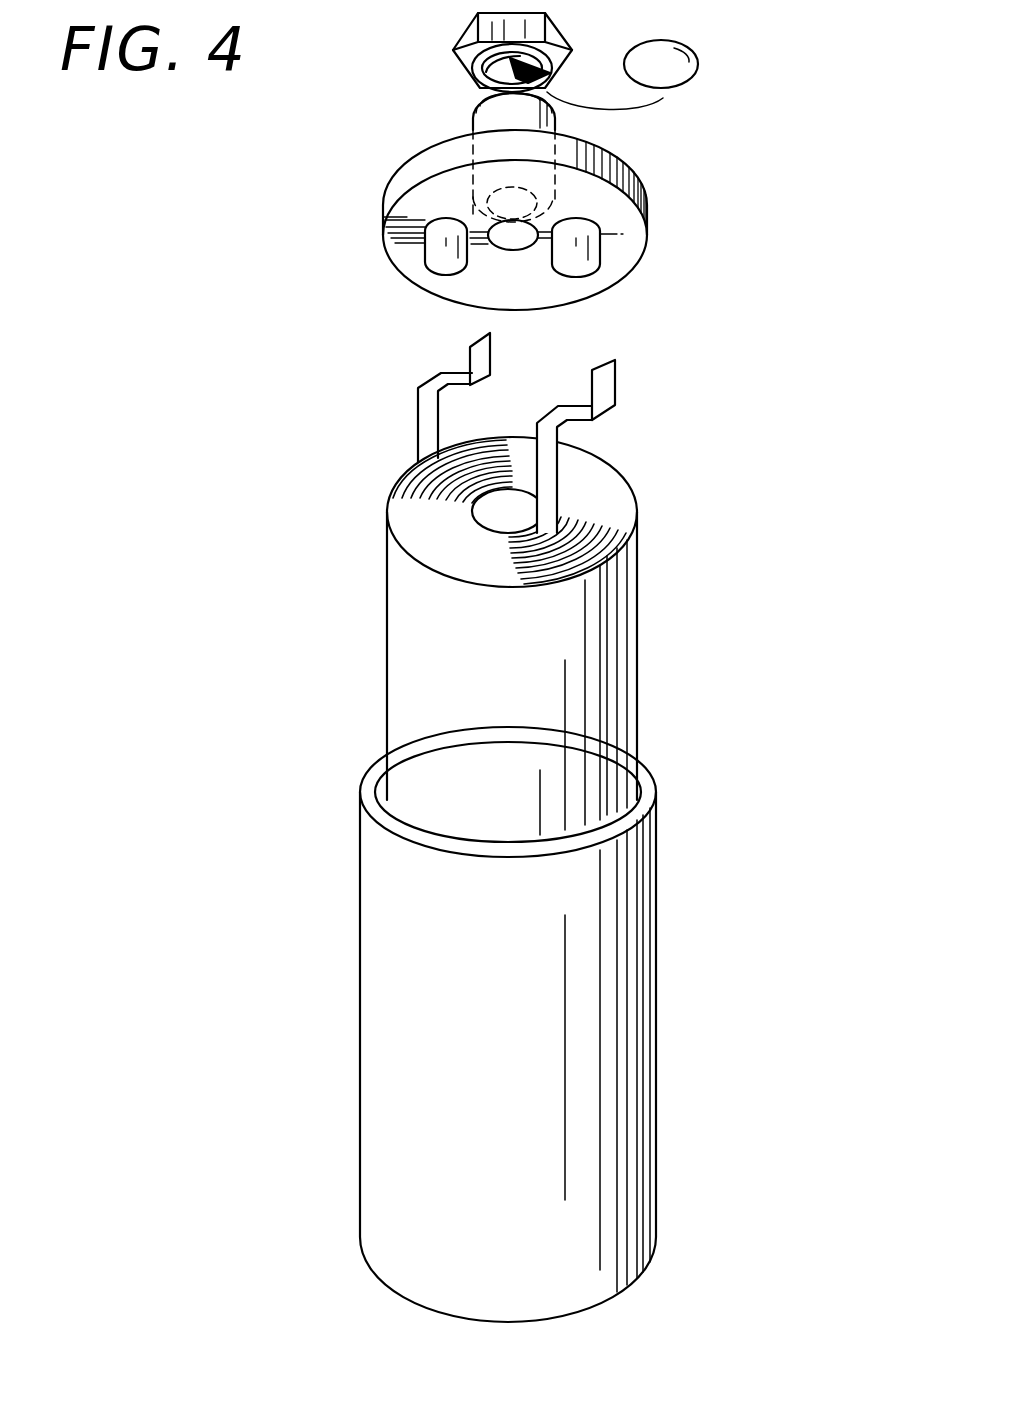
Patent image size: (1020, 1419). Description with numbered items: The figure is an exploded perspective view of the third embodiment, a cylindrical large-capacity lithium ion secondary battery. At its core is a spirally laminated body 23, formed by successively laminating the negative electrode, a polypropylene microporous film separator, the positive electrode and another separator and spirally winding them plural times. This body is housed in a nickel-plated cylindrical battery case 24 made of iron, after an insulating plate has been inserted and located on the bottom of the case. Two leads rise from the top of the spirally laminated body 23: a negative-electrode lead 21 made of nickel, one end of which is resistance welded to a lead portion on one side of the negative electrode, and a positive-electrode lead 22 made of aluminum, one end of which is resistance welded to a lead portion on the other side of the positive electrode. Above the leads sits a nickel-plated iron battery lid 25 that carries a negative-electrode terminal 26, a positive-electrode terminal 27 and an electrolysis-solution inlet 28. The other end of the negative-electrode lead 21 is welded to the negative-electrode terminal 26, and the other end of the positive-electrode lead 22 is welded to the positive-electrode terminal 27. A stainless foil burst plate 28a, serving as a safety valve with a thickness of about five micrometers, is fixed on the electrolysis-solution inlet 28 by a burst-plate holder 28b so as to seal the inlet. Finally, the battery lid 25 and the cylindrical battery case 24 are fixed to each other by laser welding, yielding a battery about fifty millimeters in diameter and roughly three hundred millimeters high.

The negative-electrode lead 21 is at (470, 362).
The positive-electrode lead 22 is at (603, 370).
The spirally laminated body 23 is at (607, 632).
The cylindrical battery case 24 is at (632, 864).
The battery lid 25 is at (645, 190).
The negative-electrode terminal 26 is at (427, 257).
The positive-electrode terminal 27 is at (643, 255).
The electrolysis-solution inlet 28 is at (462, 107).
The burst plate 28a is at (690, 57).
The burst-plate holder 28b is at (557, 33).